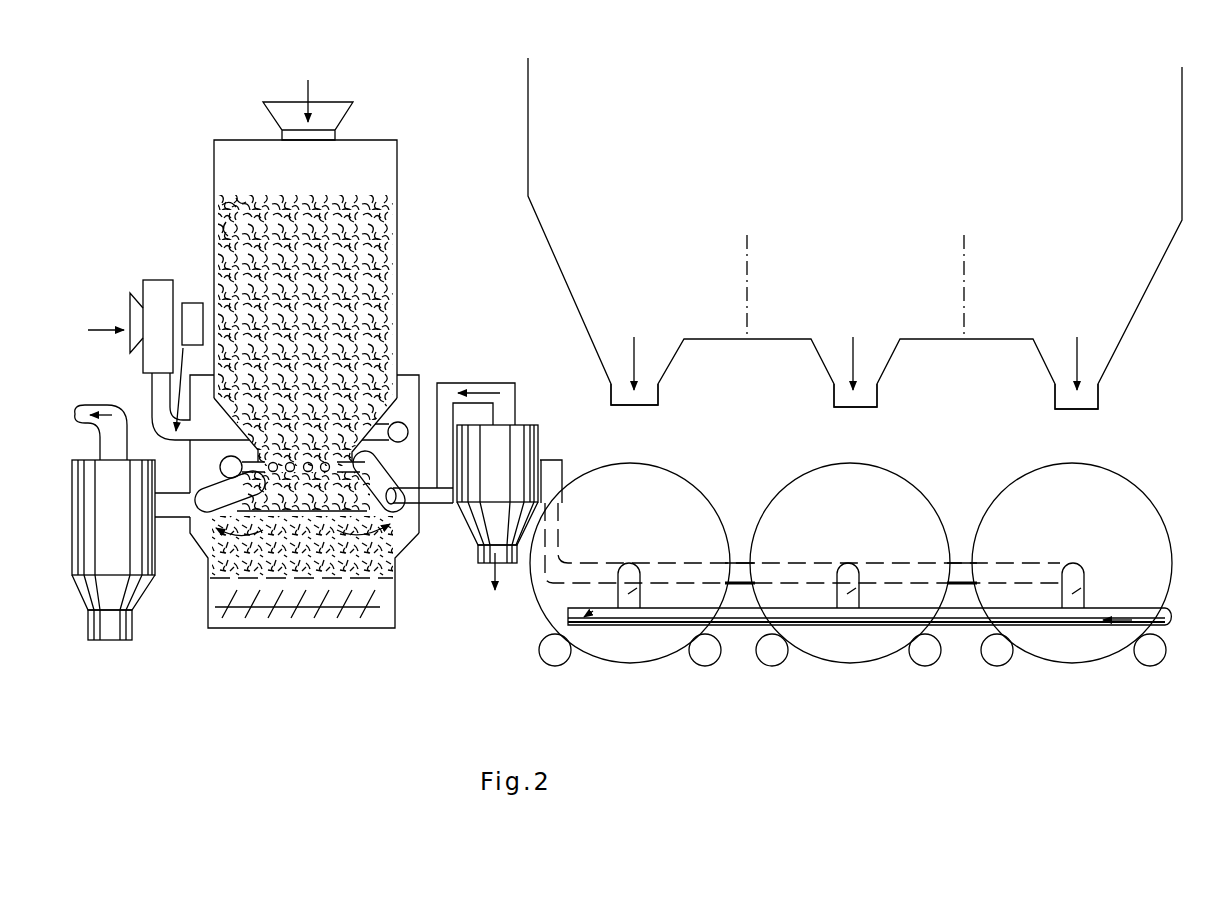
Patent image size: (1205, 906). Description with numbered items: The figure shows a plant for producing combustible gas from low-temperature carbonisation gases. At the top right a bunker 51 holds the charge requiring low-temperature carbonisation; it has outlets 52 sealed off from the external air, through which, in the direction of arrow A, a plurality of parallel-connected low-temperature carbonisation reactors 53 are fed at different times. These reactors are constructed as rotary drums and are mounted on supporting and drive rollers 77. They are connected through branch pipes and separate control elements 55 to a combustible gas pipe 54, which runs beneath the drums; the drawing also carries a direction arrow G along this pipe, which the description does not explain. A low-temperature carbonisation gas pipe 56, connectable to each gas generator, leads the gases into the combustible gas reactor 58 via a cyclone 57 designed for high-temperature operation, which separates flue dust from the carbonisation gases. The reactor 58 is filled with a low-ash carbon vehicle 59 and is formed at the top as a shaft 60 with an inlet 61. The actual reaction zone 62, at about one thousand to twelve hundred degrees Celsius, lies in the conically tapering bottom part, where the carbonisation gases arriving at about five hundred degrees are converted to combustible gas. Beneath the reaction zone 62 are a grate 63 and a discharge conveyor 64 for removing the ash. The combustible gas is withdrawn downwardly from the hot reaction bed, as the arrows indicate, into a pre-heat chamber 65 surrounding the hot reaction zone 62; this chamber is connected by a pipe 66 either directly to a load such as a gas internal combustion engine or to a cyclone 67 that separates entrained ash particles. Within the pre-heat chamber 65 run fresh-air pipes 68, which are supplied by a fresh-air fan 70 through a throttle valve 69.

The bunker 51 is at (853, 142).
The outlets 52 is at (836, 394).
The low-temperature carbonisation reactors 53 is at (1123, 508).
The combustible gas pipe 54 is at (813, 620).
The control elements 55 is at (1080, 593).
The low-temperature carbonisation gas pipe 56 is at (541, 456).
The cyclone 57 is at (482, 533).
The combustible gas reactor 58 is at (414, 236).
The low-ash carbon vehicle 59 is at (323, 300).
The shaft 60 is at (223, 218).
The inlet 61 is at (333, 113).
The reaction zone 62 is at (301, 459).
The grate 63 is at (230, 575).
The discharge conveyor 64 is at (372, 612).
The pre-heat chamber 65 is at (407, 530).
The pipe 66 is at (172, 503).
The cyclone 67 is at (130, 570).
The fresh-air pipes 68 is at (399, 423).
The throttle valve 69 is at (192, 367).
The fresh-air fan 70 is at (157, 281).
The supporting and drive rollers 77 is at (553, 647).
The arrow A is at (867, 362).
The direction of travel G is at (1125, 623).